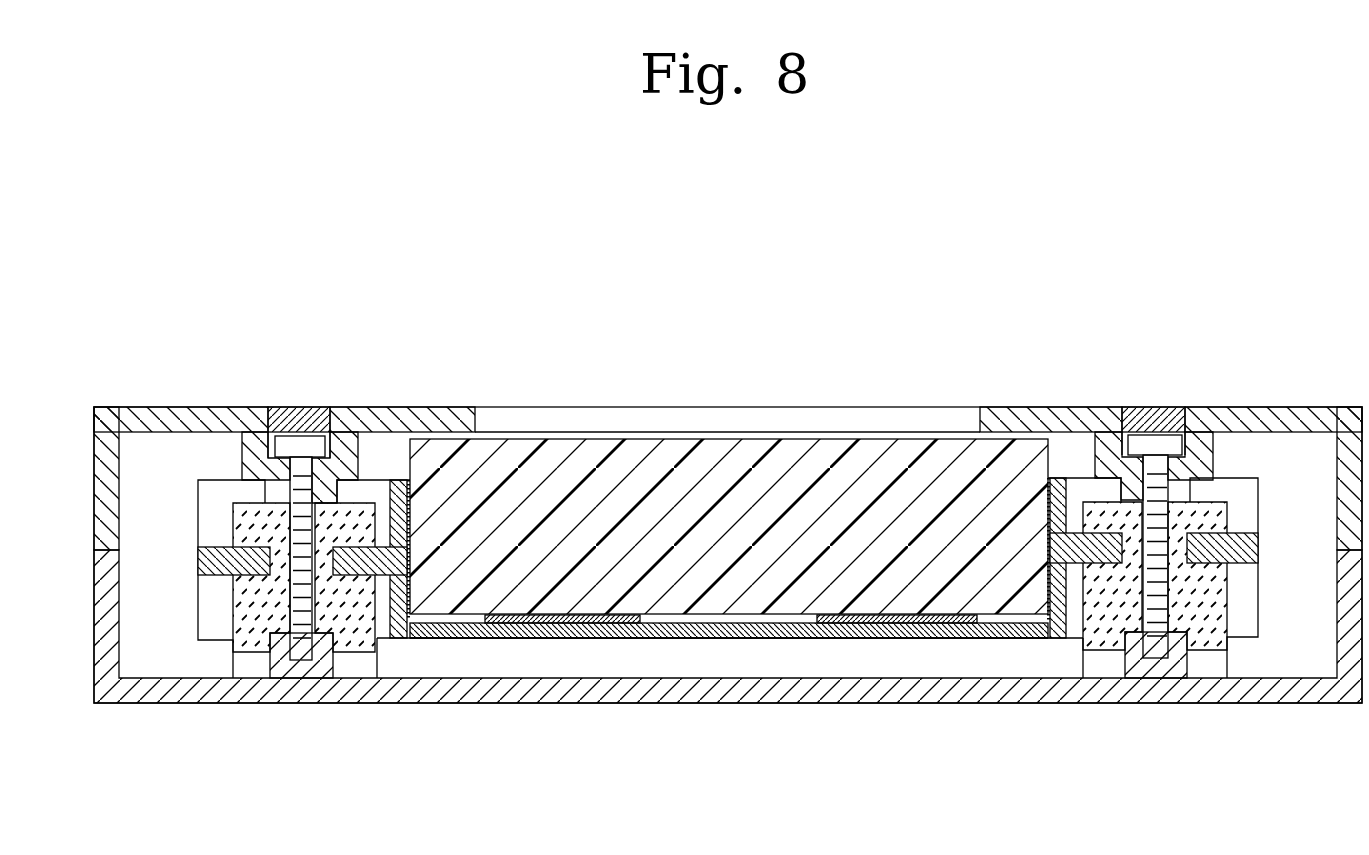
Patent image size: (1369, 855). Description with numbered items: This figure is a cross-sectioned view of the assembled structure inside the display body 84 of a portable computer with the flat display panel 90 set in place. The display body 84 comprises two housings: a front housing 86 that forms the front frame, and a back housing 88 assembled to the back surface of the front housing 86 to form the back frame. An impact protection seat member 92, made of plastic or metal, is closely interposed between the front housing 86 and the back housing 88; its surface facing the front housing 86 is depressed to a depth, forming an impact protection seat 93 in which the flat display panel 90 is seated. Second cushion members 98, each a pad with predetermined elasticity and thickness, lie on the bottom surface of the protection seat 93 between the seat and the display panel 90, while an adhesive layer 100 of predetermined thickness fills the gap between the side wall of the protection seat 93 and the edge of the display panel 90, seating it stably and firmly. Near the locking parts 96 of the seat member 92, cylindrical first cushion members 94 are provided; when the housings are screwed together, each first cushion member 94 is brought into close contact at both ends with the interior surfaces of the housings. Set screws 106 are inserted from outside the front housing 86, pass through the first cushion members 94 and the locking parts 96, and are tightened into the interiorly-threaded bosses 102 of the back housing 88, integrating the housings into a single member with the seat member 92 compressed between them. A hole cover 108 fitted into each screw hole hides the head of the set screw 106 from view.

The display body 84 is at (357, 255).
The front housing 86 is at (146, 408).
The back housing 88 is at (228, 690).
The flat display panel 90 is at (507, 453).
The impact protection seat member 92 is at (487, 625).
The impact protection seat 93 is at (737, 625).
The first cushion member 94 is at (262, 643).
The locking part 96 is at (208, 566).
The second cushion member 98 is at (605, 625).
The adhesive layer 100 is at (410, 638).
The interiorly-threaded boss 102 is at (323, 652).
The set screw 106 is at (289, 440).
The hole cover 108 is at (302, 414).